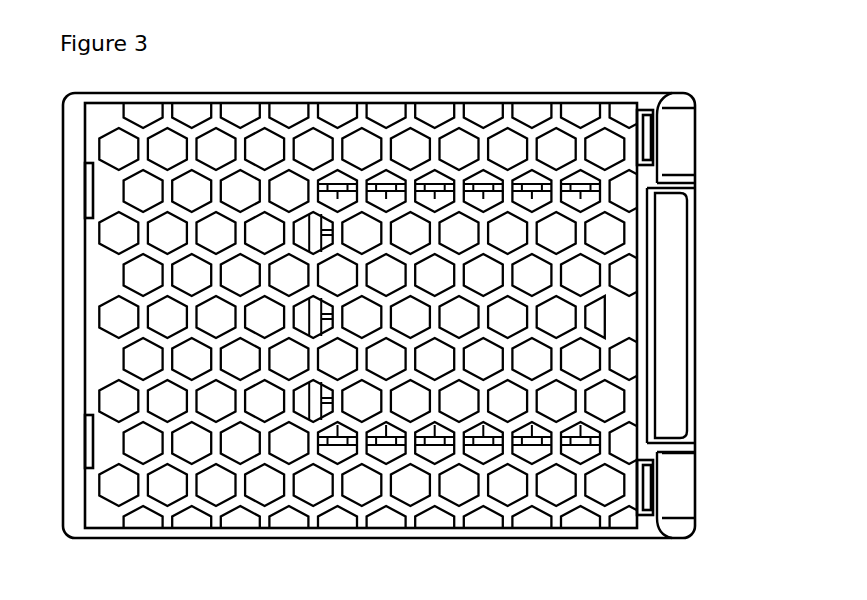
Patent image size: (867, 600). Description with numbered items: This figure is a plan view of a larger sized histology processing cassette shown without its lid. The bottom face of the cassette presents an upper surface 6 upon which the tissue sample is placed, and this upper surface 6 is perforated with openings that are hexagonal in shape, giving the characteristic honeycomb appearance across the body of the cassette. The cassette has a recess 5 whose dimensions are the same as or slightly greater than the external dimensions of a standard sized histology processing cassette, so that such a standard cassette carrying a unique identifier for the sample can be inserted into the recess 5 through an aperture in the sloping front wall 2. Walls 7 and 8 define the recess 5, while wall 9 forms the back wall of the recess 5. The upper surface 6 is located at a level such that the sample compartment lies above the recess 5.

The front wall 2 is at (678, 145).
The recess 5 is at (660, 312).
The upper surface of the bottom face 6 is at (268, 142).
The wall 7 is at (484, 197).
The wall 8 is at (485, 446).
The back wall of the recess 9 is at (318, 318).